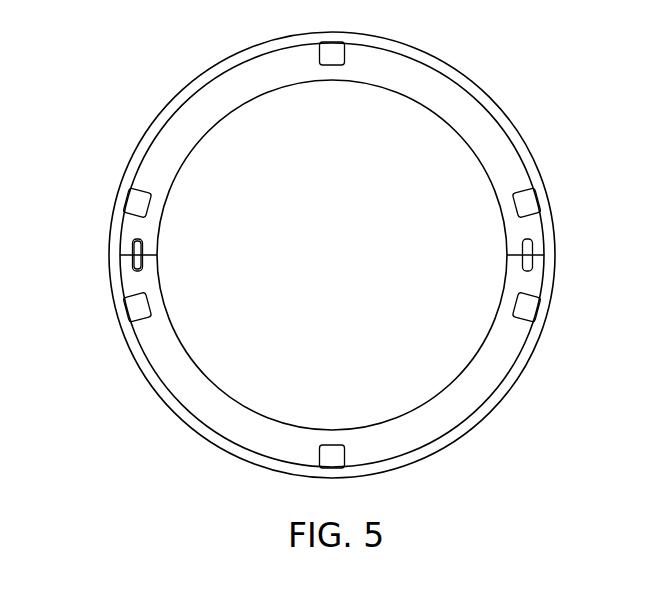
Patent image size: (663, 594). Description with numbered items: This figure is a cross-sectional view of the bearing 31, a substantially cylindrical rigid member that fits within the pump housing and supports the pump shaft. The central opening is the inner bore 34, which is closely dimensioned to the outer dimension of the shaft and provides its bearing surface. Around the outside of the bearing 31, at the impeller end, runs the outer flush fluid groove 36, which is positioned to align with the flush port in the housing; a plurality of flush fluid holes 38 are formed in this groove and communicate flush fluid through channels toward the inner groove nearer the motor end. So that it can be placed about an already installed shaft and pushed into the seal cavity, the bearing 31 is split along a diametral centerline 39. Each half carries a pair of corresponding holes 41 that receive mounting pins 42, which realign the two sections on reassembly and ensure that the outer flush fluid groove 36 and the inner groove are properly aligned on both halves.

The bearing 31 is at (118, 353).
The inner bore 34 is at (332, 424).
The outer flush fluid groove 36 is at (512, 382).
The flush fluid holes 38 is at (527, 199).
The centerline 39 is at (520, 245).
The holes 41 is at (140, 262).
The mounting pins 42 is at (136, 244).